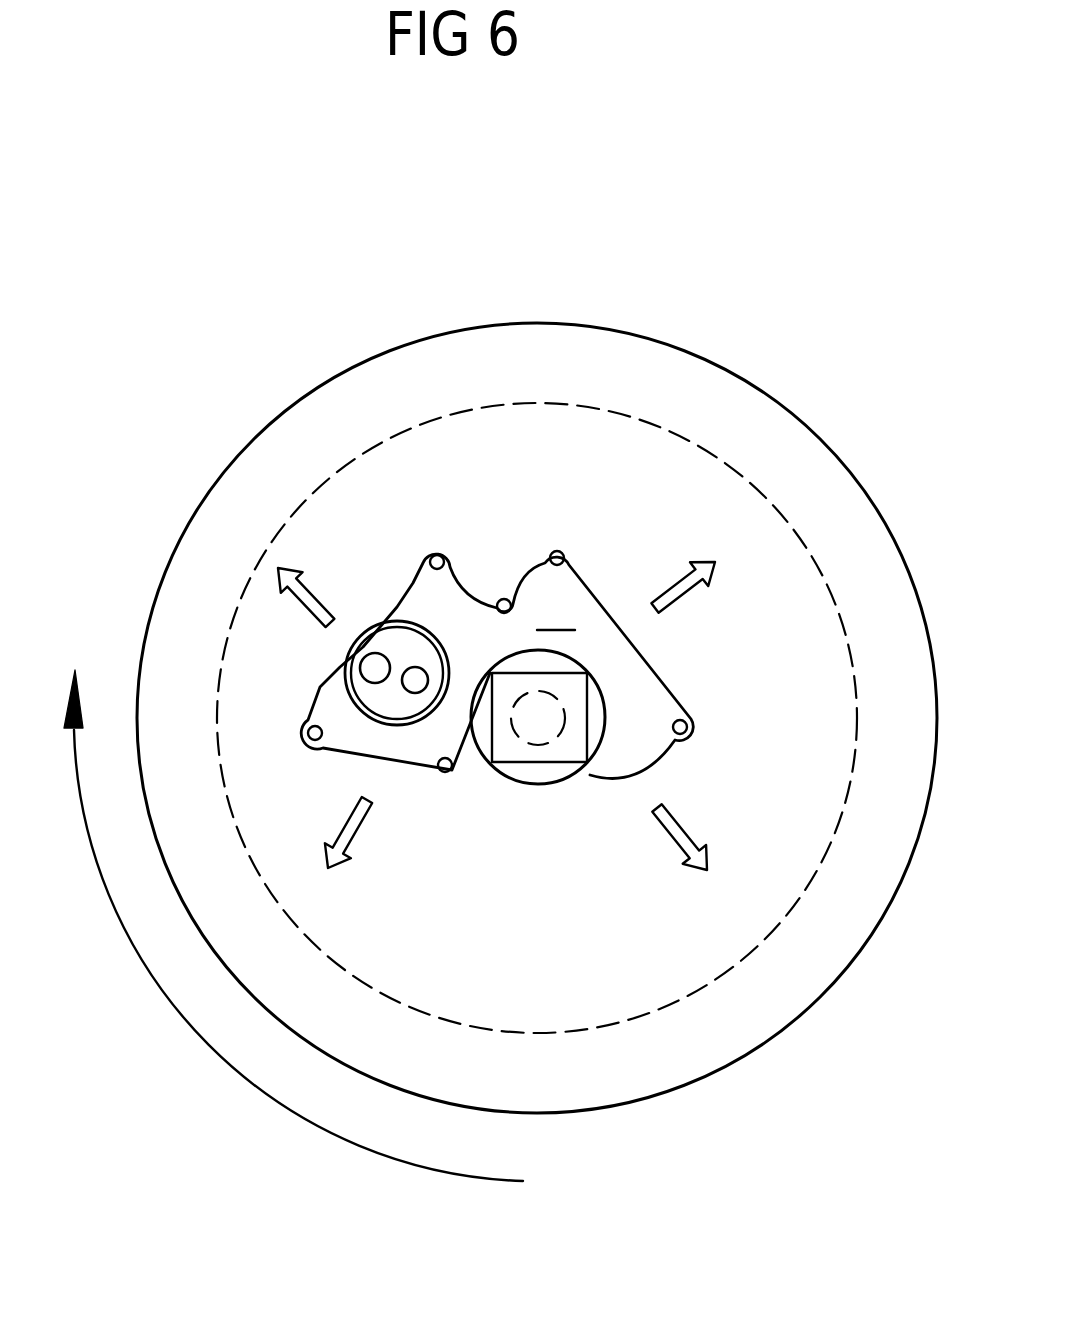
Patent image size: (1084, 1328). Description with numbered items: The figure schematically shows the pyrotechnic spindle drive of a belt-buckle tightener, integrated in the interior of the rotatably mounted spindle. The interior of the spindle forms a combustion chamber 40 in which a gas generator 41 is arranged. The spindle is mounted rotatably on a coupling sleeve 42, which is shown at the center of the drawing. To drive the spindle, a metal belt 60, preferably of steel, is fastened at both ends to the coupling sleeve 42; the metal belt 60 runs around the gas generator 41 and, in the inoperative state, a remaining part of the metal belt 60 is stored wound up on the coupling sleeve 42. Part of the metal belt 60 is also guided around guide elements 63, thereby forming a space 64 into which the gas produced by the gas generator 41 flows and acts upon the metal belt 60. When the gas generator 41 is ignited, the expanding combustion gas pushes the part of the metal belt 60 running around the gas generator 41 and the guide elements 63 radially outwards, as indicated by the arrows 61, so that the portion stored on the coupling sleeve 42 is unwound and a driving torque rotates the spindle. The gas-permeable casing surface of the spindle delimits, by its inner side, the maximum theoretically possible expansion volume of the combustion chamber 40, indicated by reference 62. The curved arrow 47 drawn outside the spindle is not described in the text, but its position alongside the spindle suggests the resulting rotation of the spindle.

The combustion chamber 40 is at (487, 612).
The gas generator 41 is at (390, 650).
The coupling sleeve 42 is at (557, 785).
The direction of rotation arrow 47 is at (311, 1125).
The metal belt 60 is at (585, 595).
The arrows 61 is at (437, 700).
The maximum expansion volume of the combustion chamber 62 is at (276, 577).
The guide elements 63 is at (500, 600).
The space 64 is at (560, 610).